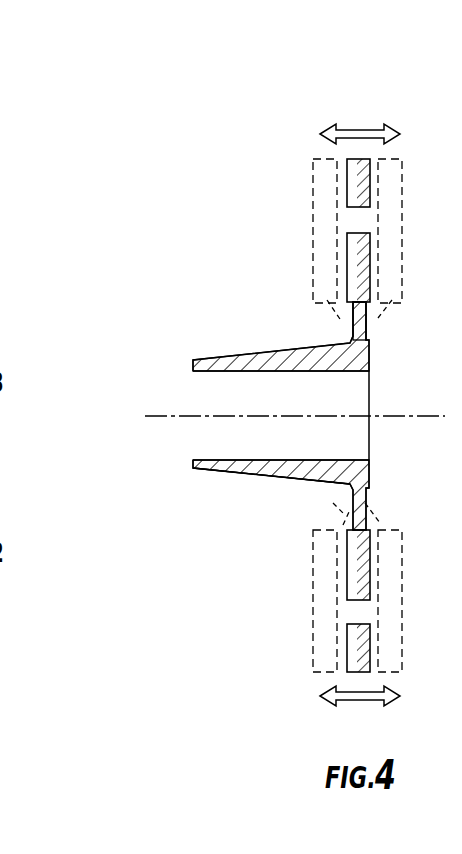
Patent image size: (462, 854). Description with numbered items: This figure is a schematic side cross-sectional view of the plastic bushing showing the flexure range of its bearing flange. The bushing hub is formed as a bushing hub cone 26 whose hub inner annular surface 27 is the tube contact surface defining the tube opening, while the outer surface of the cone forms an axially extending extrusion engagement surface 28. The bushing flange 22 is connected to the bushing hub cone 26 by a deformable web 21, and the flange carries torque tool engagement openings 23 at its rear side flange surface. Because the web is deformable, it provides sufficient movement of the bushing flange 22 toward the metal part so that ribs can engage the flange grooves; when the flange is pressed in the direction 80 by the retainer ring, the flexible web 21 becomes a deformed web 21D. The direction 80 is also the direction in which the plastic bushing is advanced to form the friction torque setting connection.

The deformable web 21 is at (370, 325).
The deformed web 21D is at (335, 503).
The bushing flange 22 is at (352, 258).
The torque tool engagement openings 23 is at (368, 190).
The bushing hub cone 26 is at (326, 458).
The hub inner annular surface 27 is at (320, 373).
The extrusion engagement surface 28 is at (233, 470).
The direction 80 is at (350, 127).